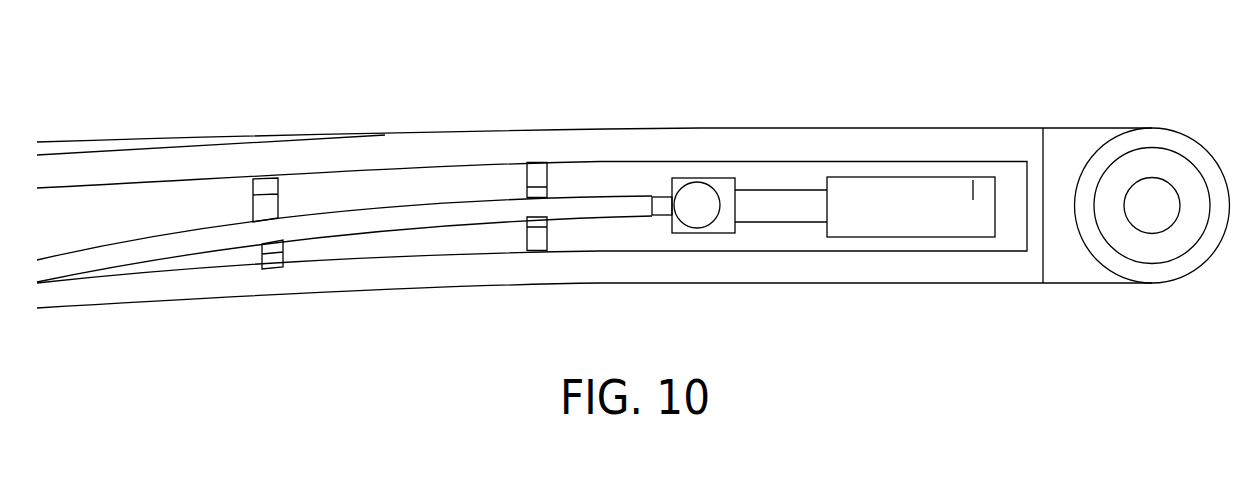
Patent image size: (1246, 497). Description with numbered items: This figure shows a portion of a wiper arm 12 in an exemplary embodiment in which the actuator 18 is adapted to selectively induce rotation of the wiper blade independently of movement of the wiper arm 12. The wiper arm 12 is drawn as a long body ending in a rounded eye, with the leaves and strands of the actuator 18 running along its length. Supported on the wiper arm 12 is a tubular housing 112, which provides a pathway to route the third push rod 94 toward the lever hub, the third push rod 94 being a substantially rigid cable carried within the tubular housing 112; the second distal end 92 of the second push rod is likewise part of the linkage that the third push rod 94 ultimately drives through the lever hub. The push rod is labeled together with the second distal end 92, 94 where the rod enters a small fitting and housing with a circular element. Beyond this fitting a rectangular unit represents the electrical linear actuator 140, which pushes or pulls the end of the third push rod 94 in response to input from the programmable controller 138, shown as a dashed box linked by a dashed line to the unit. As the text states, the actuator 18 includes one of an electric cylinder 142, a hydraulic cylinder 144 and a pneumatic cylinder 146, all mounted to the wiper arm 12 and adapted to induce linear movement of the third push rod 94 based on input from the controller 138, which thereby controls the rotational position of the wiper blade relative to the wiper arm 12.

The wiper arm 12 is at (918, 267).
The actuator 18 is at (358, 208).
The tubular housing 112 is at (512, 205).
The second distal end of the second push rod 92 is at (643, 256).
The third push rod 94 is at (663, 205).
The programmable controller 138 is at (973, 195).
The electrical linear actuator 140 is at (834, 160).
The electric cylinder 142 is at (834, 160).
The hydraulic cylinder 144 is at (834, 160).
The pneumatic cylinder 146 is at (890, 202).